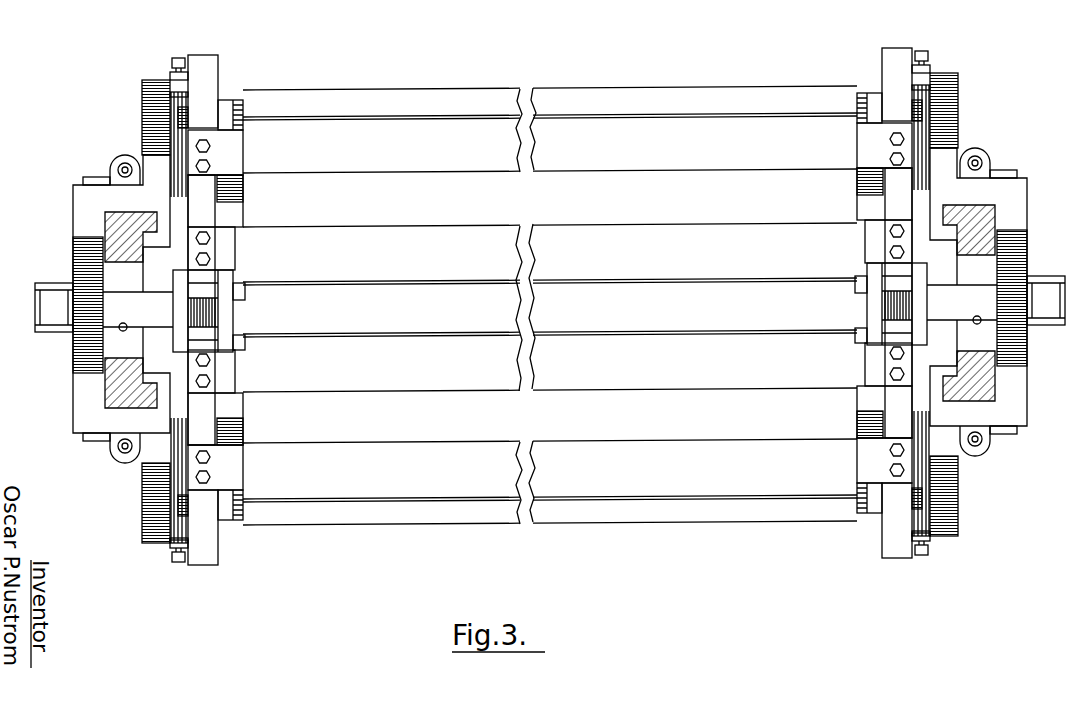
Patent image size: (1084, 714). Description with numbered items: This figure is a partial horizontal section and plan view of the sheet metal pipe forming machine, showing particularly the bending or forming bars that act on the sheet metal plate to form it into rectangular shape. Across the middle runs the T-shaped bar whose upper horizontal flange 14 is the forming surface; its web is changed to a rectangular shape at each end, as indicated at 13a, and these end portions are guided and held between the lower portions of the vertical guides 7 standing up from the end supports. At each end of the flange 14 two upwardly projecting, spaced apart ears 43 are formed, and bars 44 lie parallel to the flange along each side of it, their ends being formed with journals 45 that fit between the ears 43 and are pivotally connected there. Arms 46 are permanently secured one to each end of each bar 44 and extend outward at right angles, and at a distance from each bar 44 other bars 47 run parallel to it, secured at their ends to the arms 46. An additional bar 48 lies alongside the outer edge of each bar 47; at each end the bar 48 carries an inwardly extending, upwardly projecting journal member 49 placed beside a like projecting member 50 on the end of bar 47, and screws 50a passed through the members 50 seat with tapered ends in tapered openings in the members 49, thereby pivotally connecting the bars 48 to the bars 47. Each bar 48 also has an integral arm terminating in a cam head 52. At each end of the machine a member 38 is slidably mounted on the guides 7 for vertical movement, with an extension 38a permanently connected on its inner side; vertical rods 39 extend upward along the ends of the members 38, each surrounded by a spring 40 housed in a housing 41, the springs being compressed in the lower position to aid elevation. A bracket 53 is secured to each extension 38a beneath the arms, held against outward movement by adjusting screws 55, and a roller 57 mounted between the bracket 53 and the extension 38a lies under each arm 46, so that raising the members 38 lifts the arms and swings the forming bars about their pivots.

The guides 7 is at (107, 230).
The rectangular end portions of the T-bar 13a is at (110, 312).
The upper horizontal flange 14 is at (455, 322).
The member 38 is at (85, 345).
The extension 38a is at (150, 95).
The rods 39 is at (83, 180).
The spring 40 is at (118, 168).
The housing 41 is at (132, 162).
The ears 43 is at (200, 310).
The bars 44 is at (600, 228).
The journals 45 is at (208, 258).
The arms 46 is at (210, 225).
The bars 47 is at (482, 150).
The bar 48 is at (600, 90).
The journal member 49 is at (240, 112).
The projecting member 50 is at (205, 100).
The screws 50a is at (178, 110).
The cam head 52 is at (225, 190).
The bracket 53 is at (212, 165).
The adjusting screws 55 is at (176, 58).
The roller 57 is at (182, 190).